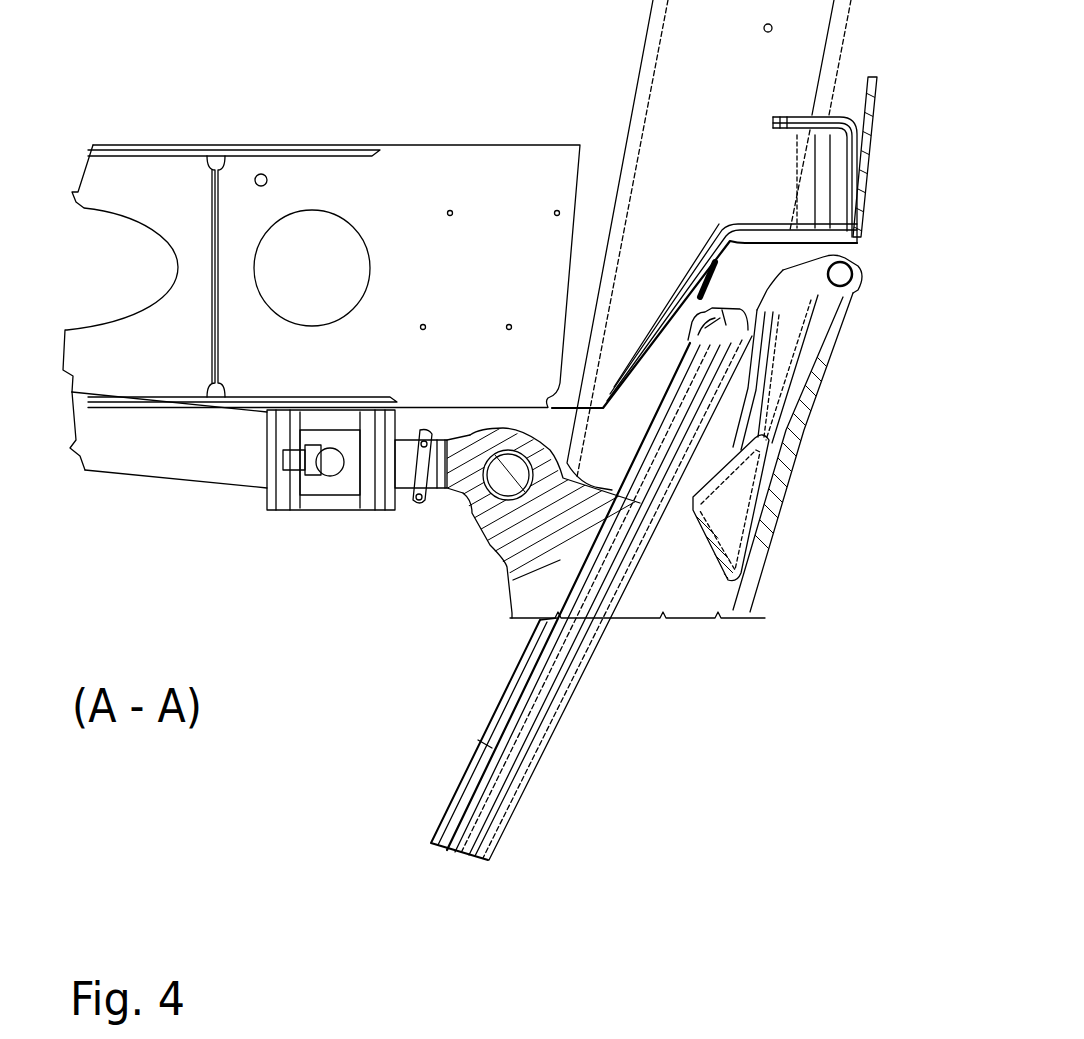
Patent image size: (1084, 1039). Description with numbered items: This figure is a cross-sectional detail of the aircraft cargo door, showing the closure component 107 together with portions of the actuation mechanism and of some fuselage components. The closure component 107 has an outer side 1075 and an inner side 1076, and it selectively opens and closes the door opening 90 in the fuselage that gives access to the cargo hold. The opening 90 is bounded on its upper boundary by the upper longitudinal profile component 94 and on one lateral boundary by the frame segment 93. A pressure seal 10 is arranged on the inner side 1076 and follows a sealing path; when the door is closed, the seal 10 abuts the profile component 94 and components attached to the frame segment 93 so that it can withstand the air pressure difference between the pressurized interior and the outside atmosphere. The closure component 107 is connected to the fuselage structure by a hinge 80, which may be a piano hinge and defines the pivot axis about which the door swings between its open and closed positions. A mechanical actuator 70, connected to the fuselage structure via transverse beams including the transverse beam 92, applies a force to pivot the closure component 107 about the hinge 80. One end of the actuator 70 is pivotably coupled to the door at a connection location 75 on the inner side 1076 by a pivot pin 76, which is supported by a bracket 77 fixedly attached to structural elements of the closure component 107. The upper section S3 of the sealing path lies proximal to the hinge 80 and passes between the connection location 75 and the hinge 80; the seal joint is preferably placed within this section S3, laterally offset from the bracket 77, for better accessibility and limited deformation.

The pressure seal 10 is at (703, 357).
The mechanical actuator 70 is at (172, 465).
The connection location 75 is at (455, 532).
The pivot pin 76 is at (497, 482).
The bracket 77 is at (503, 543).
The hinge 80 is at (862, 270).
The door opening 90 is at (598, 438).
The transverse beam 92 is at (229, 128).
The frame segment 93 is at (668, 95).
The upper longitudinal profile component 94 is at (750, 236).
The closure component 107 is at (737, 592).
The outer side 1075 is at (778, 563).
The inner side 1076 is at (452, 716).
The upper section of the sealing path S3 is at (727, 316).